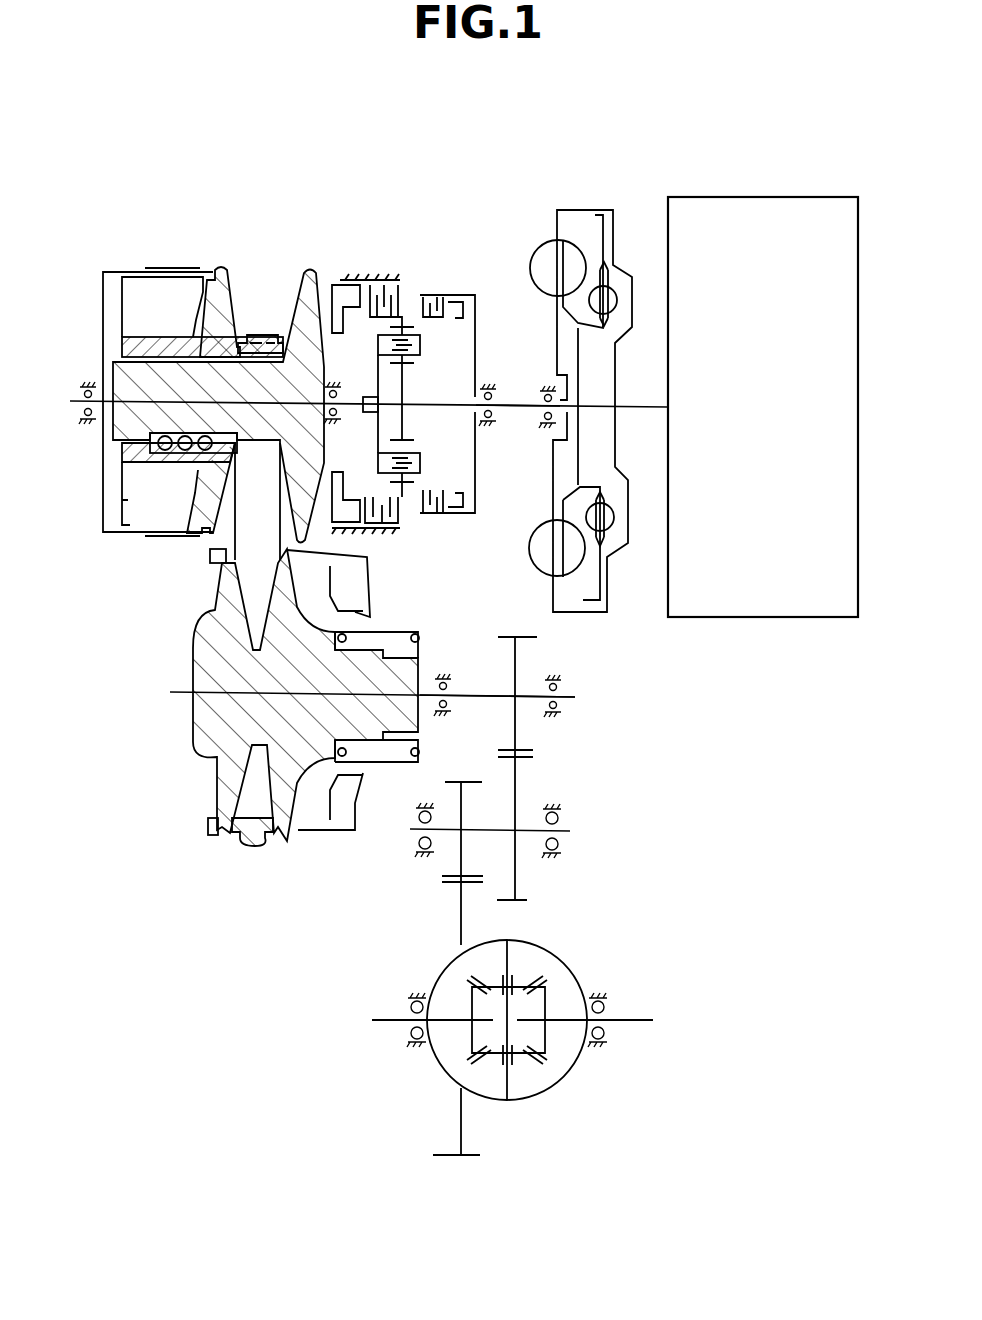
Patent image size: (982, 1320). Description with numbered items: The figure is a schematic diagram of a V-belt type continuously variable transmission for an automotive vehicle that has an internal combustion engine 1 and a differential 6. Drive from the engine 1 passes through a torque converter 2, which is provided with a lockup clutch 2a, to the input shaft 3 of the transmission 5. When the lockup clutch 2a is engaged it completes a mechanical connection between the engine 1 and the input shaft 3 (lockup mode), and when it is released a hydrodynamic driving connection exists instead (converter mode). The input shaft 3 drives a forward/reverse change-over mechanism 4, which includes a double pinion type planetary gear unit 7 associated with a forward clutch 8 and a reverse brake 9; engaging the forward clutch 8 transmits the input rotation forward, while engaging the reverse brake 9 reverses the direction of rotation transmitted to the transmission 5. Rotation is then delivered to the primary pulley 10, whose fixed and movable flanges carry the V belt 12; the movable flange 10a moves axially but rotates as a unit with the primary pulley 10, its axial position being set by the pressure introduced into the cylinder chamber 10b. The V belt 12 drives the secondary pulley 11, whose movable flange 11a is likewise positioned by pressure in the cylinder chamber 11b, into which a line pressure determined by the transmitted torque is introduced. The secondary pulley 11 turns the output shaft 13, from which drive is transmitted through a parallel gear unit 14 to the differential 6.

The internal combustion engine 1 is at (798, 197).
The torque converter 2 is at (598, 375).
The lockup clutch 2a is at (617, 248).
The input shaft 3 is at (525, 403).
The forward/reverse change-over mechanism 4 is at (409, 374).
The transmission 5 is at (217, 366).
The differential 6 is at (576, 963).
The double pinion type planetary gear unit 7 is at (430, 462).
The forward clutch 8 is at (440, 296).
The reverse brake 9 is at (381, 288).
The primary pulley 10 is at (293, 300).
The movable flange 10a is at (219, 266).
The cylinder chamber 10b is at (158, 290).
The secondary pulley 11 is at (273, 738).
The movable flange 11a is at (280, 840).
The cylinder chamber 11b is at (315, 818).
The V belt 12 is at (262, 334).
The output shaft 13 is at (478, 696).
The parallel gear unit 14 is at (538, 778).